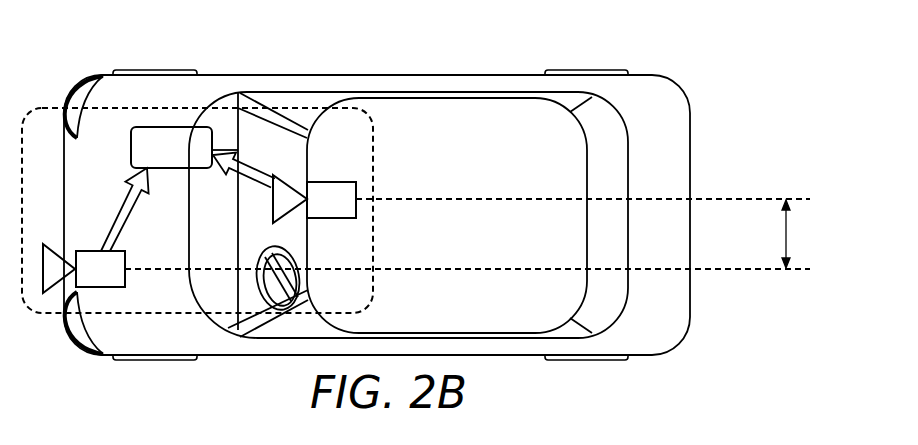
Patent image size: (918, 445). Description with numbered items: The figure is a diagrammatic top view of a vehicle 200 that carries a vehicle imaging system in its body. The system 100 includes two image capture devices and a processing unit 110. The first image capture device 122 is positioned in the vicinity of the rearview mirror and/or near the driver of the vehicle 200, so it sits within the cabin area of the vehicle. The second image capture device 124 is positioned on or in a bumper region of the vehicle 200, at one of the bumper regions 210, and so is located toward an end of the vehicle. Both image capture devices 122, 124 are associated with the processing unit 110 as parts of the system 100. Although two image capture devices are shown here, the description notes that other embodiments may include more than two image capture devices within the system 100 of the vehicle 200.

The system 100 is at (372, 123).
The processing unit 110 is at (160, 127).
The first image capture device 122 is at (330, 182).
The second image capture device 124 is at (98, 251).
The vehicle 200 is at (757, 72).
The bumper regions 210 is at (82, 82).